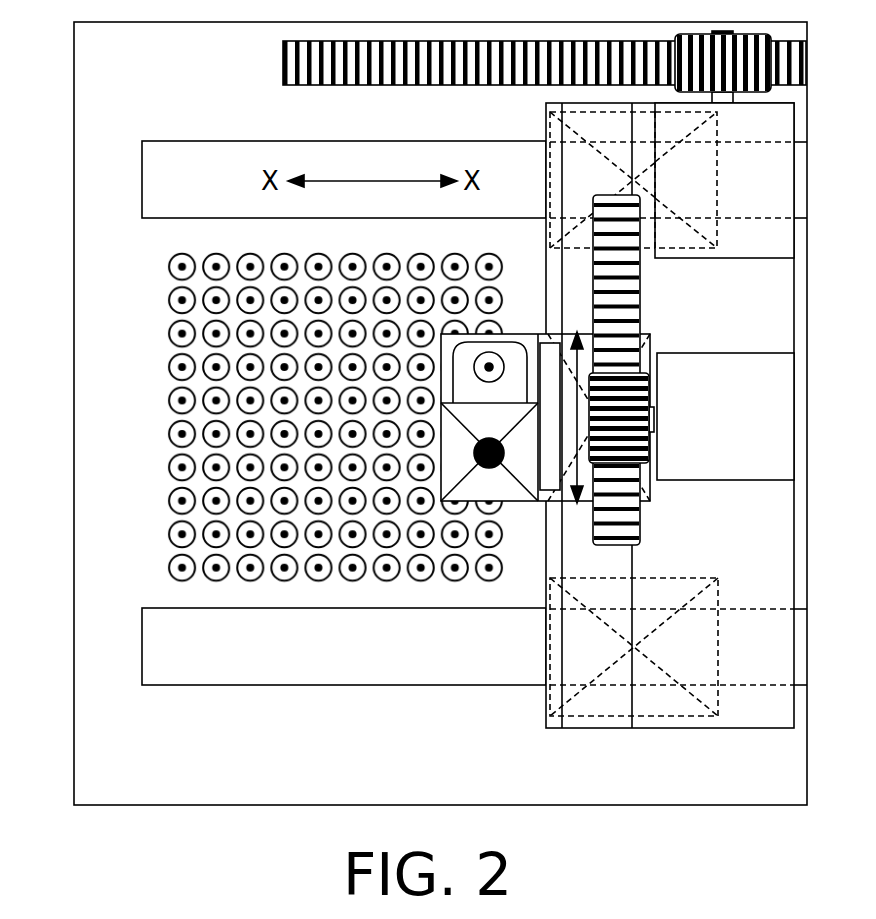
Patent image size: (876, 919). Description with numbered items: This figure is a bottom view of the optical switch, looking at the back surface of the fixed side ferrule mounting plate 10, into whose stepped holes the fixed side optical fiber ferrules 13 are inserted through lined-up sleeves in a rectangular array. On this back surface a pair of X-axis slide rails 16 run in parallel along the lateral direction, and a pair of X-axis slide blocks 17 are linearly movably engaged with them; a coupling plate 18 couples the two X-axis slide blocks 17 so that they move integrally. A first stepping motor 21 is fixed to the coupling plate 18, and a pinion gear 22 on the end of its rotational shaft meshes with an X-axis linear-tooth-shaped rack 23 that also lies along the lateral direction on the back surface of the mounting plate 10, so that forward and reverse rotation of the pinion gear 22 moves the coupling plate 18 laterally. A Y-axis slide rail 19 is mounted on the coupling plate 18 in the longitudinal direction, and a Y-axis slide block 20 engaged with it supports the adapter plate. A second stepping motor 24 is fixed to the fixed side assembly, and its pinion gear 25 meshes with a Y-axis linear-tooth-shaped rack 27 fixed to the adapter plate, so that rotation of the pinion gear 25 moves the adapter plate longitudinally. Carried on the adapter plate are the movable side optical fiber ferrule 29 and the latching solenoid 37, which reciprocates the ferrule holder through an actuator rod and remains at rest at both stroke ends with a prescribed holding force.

The fixed side ferrule mounting plate 10 is at (74, 79).
The fixed side optical fiber ferrules 13 is at (169, 266).
The X-axis slide rails 16 is at (207, 148).
The X-axis slide blocks 17 is at (550, 116).
The coupling plate 18 is at (794, 572).
The Y-axis slide rail 19 is at (631, 566).
The Y-axis slide block 20 is at (650, 338).
The first stepping motor 21 is at (794, 182).
The pinion gear 22 is at (745, 95).
The X-axis linear-tooth-shaped rack 23 is at (383, 70).
The second stepping motor 24 is at (745, 372).
The pinion gear 25 is at (638, 436).
The Y-axis linear-tooth-shaped rack 27 is at (633, 519).
The movable side optical fiber ferrule 29 is at (501, 357).
The latching solenoid 37 is at (520, 494).